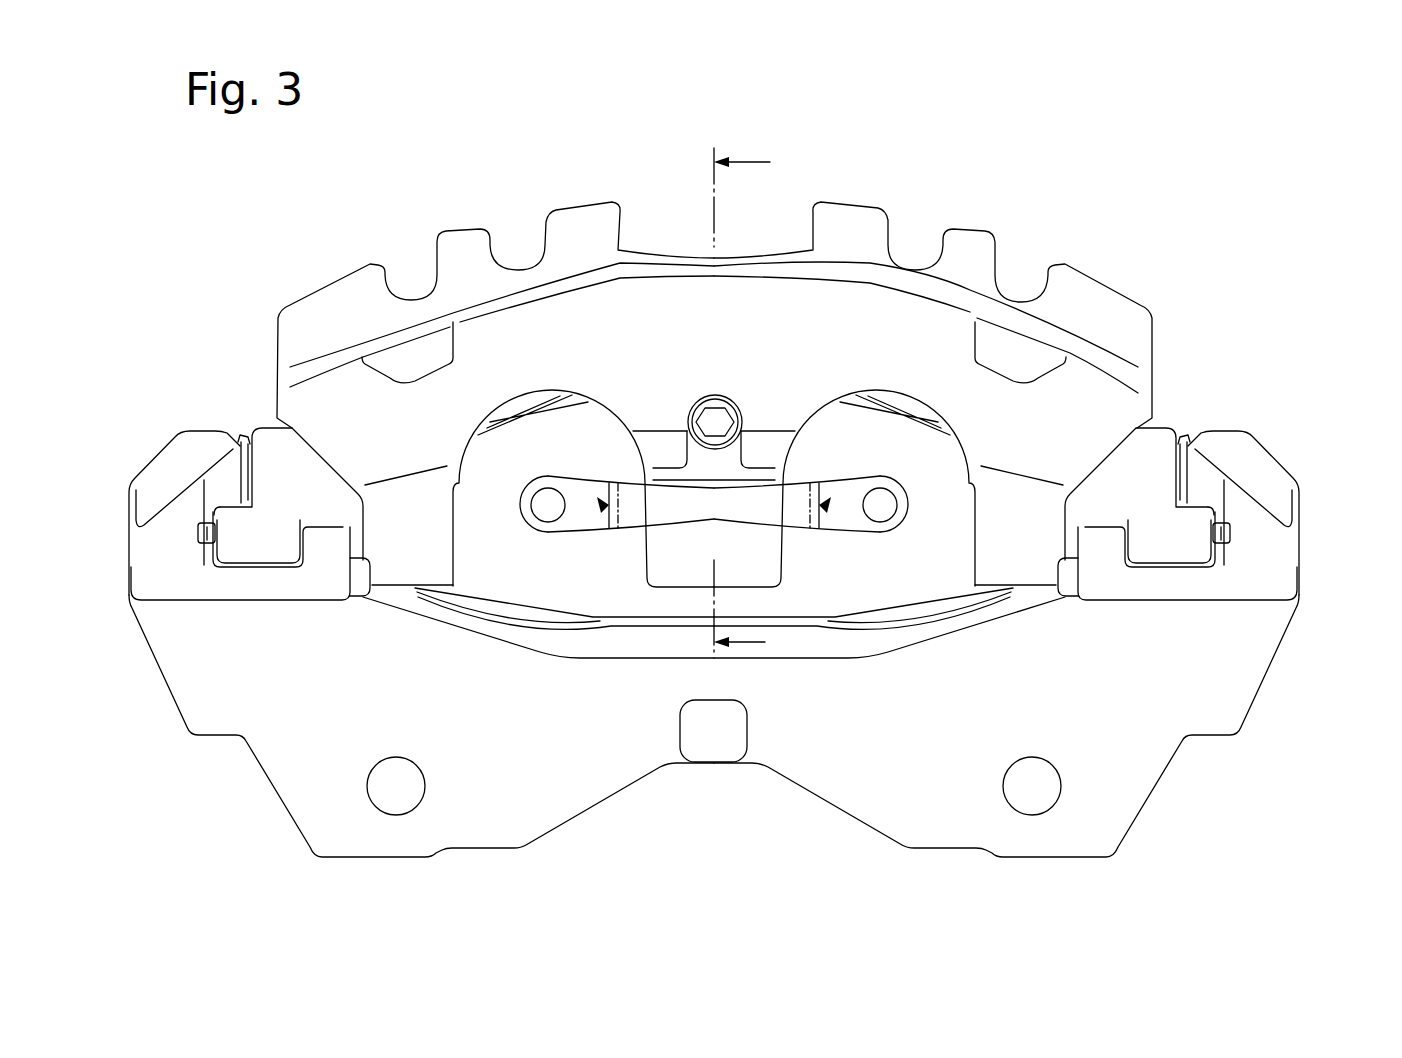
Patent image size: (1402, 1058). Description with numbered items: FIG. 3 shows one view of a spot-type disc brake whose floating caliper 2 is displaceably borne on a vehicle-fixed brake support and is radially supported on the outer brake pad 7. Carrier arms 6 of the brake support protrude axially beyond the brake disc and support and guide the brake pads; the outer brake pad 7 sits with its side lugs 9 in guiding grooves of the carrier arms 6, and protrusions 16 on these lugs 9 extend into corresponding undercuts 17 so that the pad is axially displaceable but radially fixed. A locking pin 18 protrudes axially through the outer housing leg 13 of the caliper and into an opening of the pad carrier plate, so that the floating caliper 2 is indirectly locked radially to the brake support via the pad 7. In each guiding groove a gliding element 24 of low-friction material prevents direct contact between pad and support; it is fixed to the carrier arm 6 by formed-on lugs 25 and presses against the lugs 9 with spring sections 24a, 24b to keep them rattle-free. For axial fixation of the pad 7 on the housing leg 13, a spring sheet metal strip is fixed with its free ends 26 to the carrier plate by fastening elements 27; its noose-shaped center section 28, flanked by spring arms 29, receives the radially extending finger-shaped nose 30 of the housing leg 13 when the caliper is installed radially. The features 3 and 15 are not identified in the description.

The floating caliper 2 is at (556, 182).
The fastening holes 3 is at (400, 801).
The carrier arms 6 is at (182, 455).
The outer brake pad 7 is at (582, 588).
The lugs 9 is at (298, 495).
The outer housing leg 13 is at (822, 381).
The pad backing plate 15 is at (565, 272).
The protrusions 16 is at (207, 513).
The undercut 17 is at (212, 564).
The locking pin 18 is at (701, 410).
The gliding element 24 is at (210, 568).
The spring section 24a is at (243, 447).
The spring section 24b is at (258, 568).
The formed-on lugs 25 is at (197, 534).
The free ends 26 is at (545, 532).
The fastening element 27 is at (887, 506).
The noose-shaped center section 28 is at (718, 506).
The spring arms 29 is at (603, 512).
The finger-shaped nose 30 is at (674, 461).